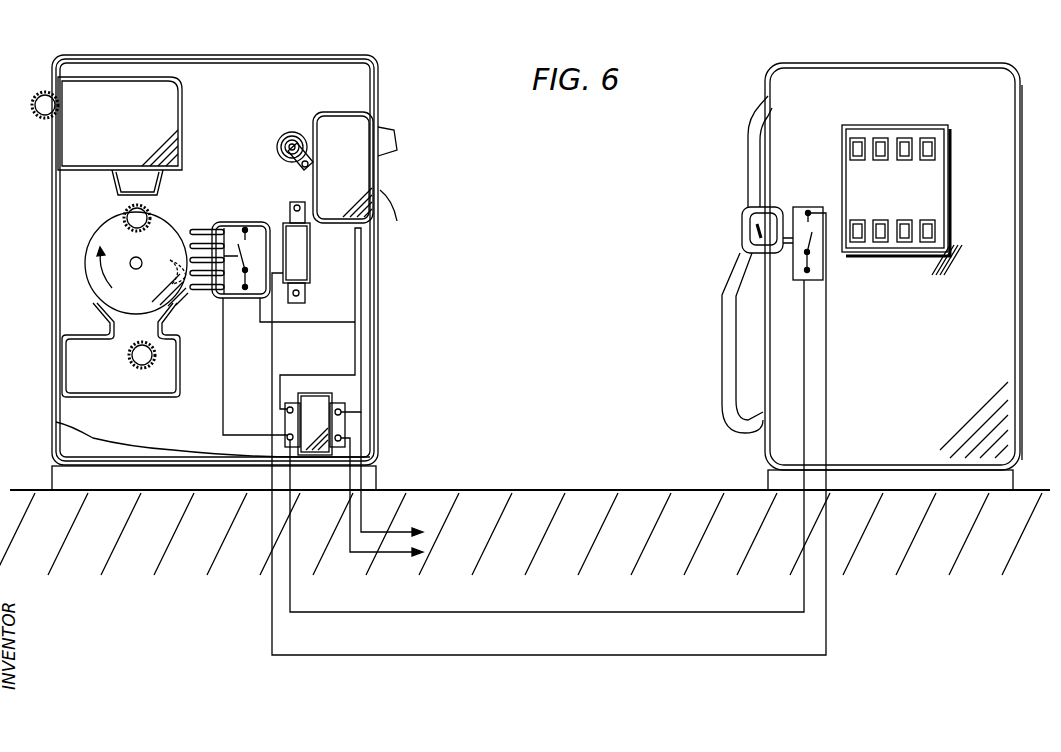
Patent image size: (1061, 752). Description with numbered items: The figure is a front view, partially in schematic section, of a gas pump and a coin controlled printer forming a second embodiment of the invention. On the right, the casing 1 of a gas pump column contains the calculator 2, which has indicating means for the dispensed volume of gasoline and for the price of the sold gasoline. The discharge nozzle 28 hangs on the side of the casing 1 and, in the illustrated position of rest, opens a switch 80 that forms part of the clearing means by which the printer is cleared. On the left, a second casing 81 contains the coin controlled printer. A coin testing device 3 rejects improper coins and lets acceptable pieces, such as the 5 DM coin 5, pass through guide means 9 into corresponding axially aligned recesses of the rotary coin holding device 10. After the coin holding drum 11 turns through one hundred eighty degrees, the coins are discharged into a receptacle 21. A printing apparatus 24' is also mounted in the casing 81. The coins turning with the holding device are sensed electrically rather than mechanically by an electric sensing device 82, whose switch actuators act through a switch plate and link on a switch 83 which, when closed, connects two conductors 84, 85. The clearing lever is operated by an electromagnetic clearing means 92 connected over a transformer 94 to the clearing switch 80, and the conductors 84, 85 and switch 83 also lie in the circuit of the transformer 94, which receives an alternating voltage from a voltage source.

The casing 1 is at (997, 332).
The calculator 2 is at (935, 192).
The coin testing device 3 is at (68, 147).
The 5 DM piece 5 is at (93, 230).
The guide means 9 is at (127, 182).
The rotary coin holding device 10 is at (78, 241).
The coin holding drum 11 is at (100, 290).
The receptacle 21 is at (110, 383).
The printing apparatus 24' is at (354, 167).
The dispensing nozzle 28 is at (750, 220).
The switch 80 is at (803, 281).
The second casing 81 is at (355, 80).
The electric sensing device 82 is at (235, 222).
The switch 83 is at (252, 232).
The conductor 84 is at (223, 375).
The conductor 85 is at (259, 316).
The electromagnetic clearing means 92 is at (298, 257).
The transformer 94 is at (315, 408).